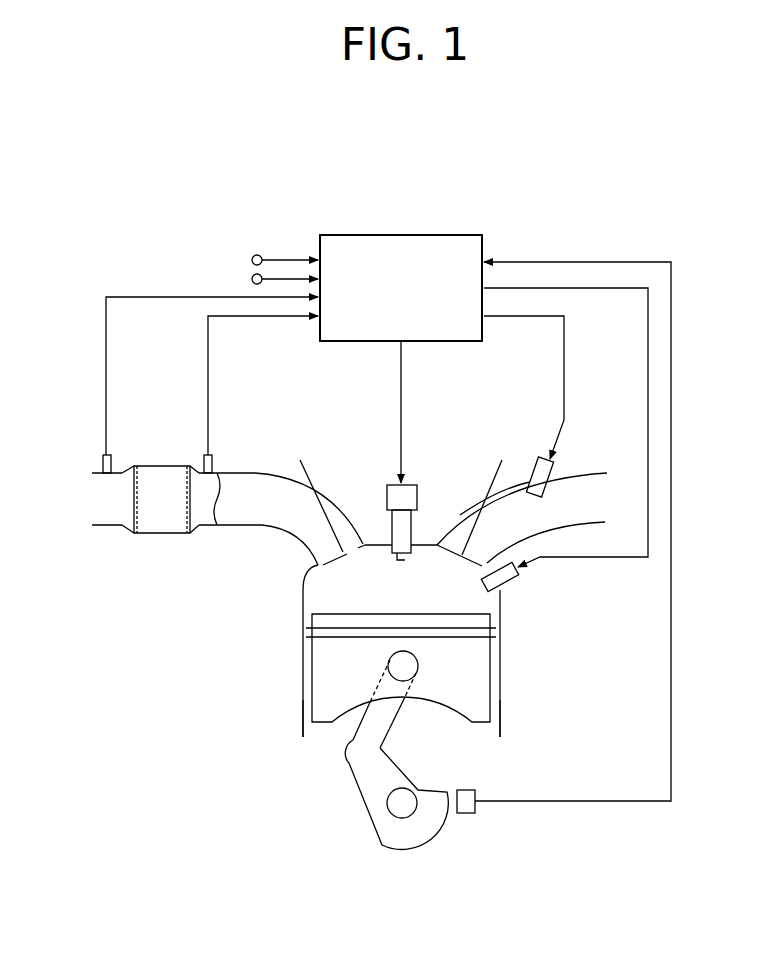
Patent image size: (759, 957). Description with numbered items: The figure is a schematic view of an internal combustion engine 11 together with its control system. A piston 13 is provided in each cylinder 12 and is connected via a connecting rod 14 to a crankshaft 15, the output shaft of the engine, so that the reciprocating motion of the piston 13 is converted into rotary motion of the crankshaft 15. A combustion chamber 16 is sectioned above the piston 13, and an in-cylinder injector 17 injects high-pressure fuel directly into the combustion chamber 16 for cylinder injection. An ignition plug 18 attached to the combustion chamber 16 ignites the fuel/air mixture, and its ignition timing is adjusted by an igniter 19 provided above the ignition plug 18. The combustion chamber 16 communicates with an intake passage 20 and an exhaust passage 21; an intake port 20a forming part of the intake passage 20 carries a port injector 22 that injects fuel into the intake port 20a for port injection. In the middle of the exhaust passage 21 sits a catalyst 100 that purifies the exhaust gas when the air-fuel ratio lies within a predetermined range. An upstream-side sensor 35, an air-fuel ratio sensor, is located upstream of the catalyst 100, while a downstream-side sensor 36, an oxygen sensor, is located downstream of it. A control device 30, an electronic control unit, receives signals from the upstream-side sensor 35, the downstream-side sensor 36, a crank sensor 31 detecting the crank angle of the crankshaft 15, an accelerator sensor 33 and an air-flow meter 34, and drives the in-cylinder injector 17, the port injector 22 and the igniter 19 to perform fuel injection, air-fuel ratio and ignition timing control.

The internal combustion engine 11 is at (532, 662).
The cylinder 12 is at (499, 737).
The piston 13 is at (322, 663).
The connecting rod 14 is at (393, 720).
The crankshaft 15 is at (362, 786).
The combustion chamber 16 is at (401, 531).
The in-cylinder injector 17 is at (517, 580).
The ignition plug 18 is at (391, 521).
The igniter 19 is at (418, 491).
The intake passage 20 is at (575, 522).
The intake port 20a is at (507, 490).
The exhaust passage 21 is at (270, 527).
The port injector 22 is at (556, 470).
The control device 30 is at (401, 235).
The crank sensor 31 is at (465, 790).
The accelerator sensor 33 is at (251, 260).
The air-flow meter 34 is at (251, 279).
The upstream-side sensor 35 is at (214, 461).
The downstream-side sensor 36 is at (102, 460).
The catalyst 100 is at (153, 465).